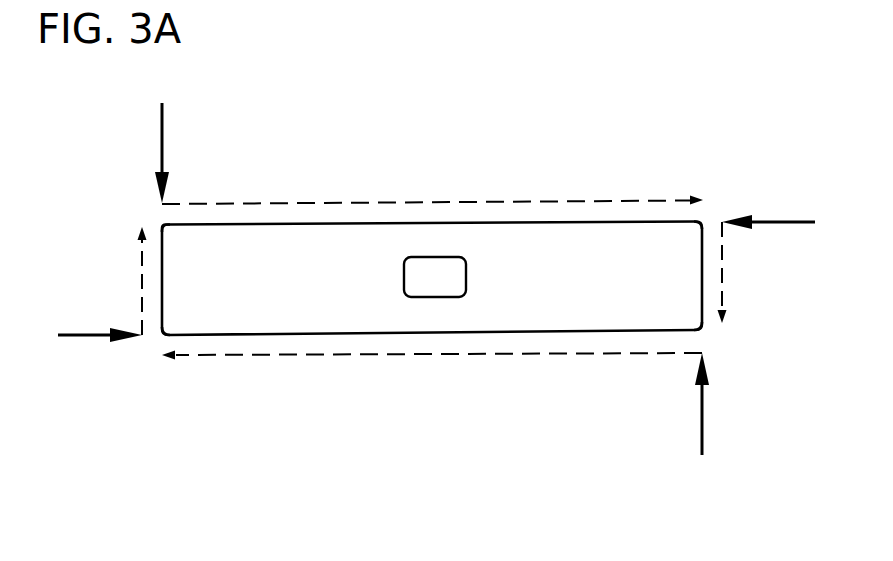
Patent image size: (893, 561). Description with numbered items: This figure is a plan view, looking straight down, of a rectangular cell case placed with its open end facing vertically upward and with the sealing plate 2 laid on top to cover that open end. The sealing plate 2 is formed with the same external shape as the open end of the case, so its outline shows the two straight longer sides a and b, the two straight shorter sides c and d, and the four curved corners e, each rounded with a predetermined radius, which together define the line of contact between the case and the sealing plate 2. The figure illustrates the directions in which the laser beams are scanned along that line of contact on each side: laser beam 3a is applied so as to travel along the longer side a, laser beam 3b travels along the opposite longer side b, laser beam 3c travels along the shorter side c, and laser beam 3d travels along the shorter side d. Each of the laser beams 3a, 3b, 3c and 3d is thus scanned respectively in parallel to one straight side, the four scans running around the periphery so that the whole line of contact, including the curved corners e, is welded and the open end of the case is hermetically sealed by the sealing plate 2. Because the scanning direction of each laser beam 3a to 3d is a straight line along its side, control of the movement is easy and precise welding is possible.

The sealing plate 2 is at (555, 240).
The longer side a is at (389, 222).
The longer side b is at (402, 333).
The shorter side c is at (160, 282).
The shorter side d is at (702, 257).
The corner e is at (160, 225).
The laser beam 3a is at (162, 130).
The laser beam 3b is at (702, 427).
The laser beam 3c is at (76, 318).
The laser beam 3d is at (782, 222).